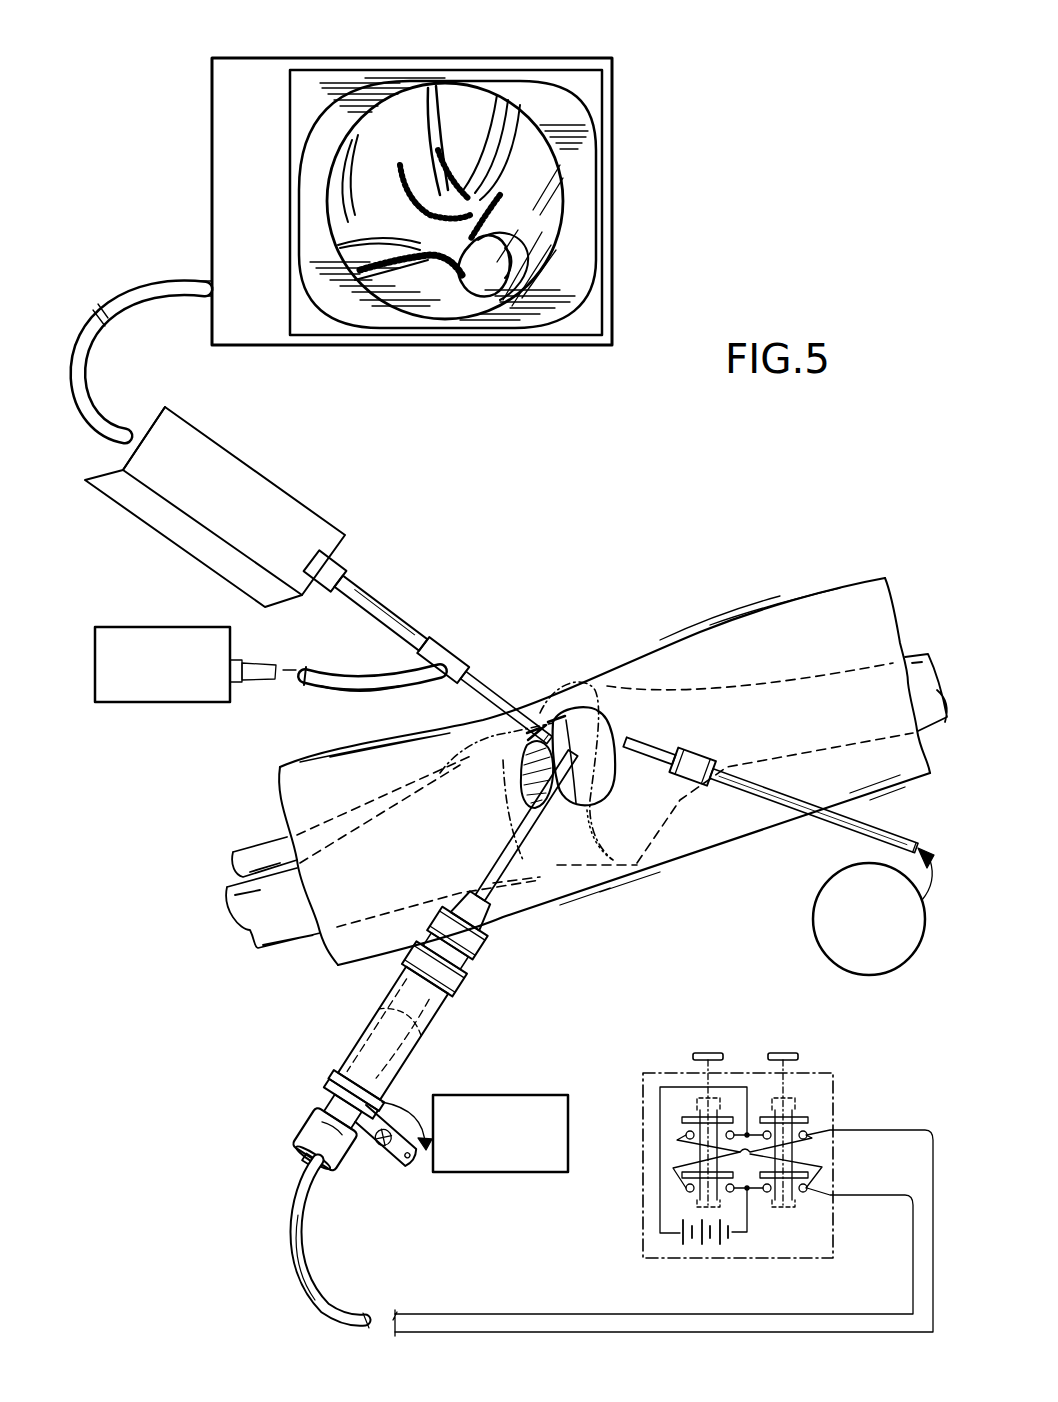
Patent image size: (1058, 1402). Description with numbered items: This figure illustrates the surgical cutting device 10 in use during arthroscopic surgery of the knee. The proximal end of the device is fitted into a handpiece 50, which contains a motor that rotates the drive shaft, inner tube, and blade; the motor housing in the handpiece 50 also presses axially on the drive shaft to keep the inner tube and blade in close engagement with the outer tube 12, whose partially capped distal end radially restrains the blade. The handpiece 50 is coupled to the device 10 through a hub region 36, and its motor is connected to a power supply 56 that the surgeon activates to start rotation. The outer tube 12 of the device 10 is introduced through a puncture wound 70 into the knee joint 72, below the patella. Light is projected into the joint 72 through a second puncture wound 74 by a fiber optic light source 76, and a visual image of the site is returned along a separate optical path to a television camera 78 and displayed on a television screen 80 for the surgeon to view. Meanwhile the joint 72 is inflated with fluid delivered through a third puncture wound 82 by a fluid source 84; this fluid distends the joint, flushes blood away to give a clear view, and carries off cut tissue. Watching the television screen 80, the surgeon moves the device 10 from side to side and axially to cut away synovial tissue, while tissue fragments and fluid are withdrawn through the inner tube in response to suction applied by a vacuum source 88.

The device 10 is at (431, 1039).
The outer tube 12 is at (497, 862).
The hub coupling 36 is at (487, 923).
The handpiece 50 is at (418, 1023).
The power supply 56 is at (835, 1237).
The puncture wound 70 is at (528, 812).
The knee joint 72 is at (557, 857).
The second puncture wound 74 is at (511, 716).
The fiber optic light source 76 is at (183, 702).
The television camera 78 is at (345, 542).
The television screen 80 is at (603, 145).
The third puncture wound 82 is at (635, 725).
The fluid source 84 is at (814, 907).
The vacuum source 88 is at (535, 1095).